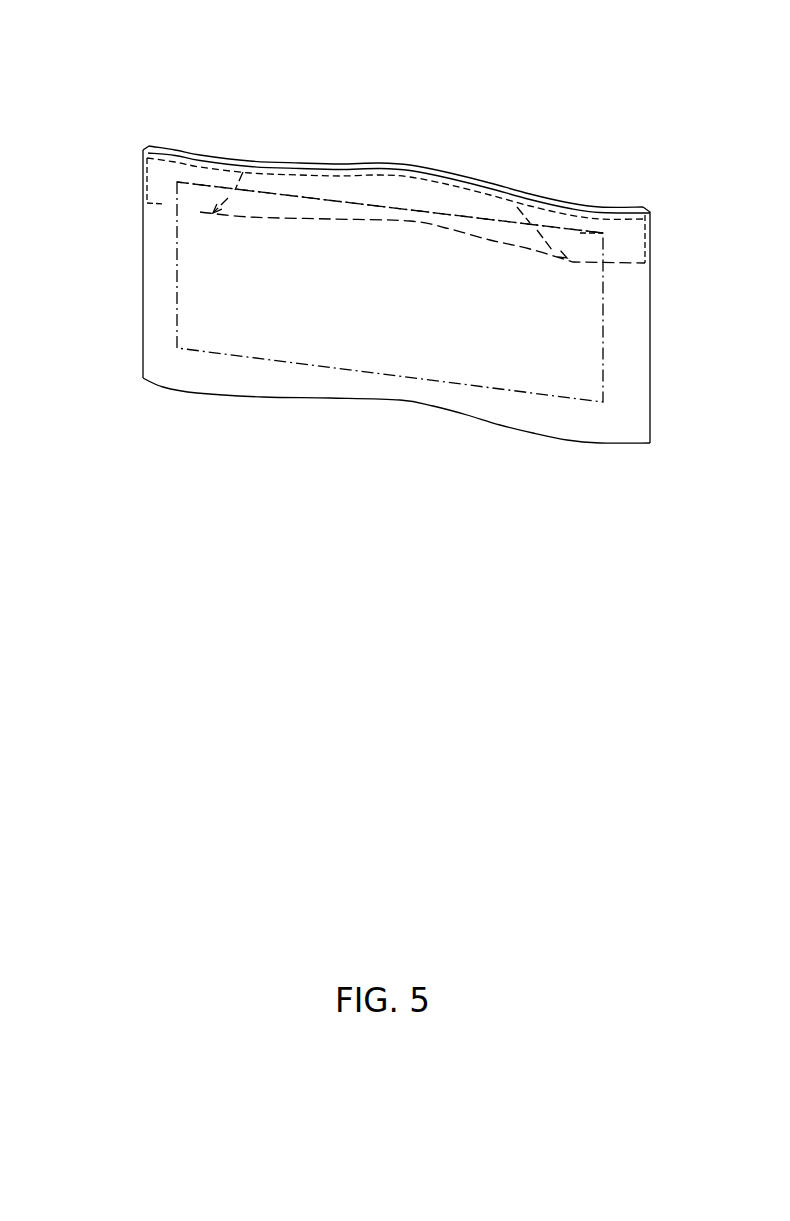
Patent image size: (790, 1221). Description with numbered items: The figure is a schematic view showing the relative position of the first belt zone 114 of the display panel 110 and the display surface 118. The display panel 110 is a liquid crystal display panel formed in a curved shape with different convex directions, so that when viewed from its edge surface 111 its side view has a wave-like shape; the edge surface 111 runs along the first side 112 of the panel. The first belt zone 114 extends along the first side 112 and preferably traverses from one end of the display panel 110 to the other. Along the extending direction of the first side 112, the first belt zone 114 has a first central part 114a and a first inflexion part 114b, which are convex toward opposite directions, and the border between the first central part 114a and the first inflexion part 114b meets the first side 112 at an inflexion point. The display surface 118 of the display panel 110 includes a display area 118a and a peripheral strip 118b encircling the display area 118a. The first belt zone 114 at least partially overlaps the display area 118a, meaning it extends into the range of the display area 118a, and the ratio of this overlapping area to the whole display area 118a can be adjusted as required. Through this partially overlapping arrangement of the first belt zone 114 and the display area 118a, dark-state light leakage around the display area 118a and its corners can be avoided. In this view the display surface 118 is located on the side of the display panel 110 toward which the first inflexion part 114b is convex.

The display panel 110 is at (127, 67).
The edge surface 111 is at (172, 154).
The first side 112 is at (212, 163).
The first belt zone 114 is at (337, 172).
The first central part 114a is at (433, 198).
The first inflexion part 114b is at (161, 160).
The display surface 118 is at (396, 343).
The display area 118a is at (275, 335).
The peripheral strip 118b is at (202, 368).